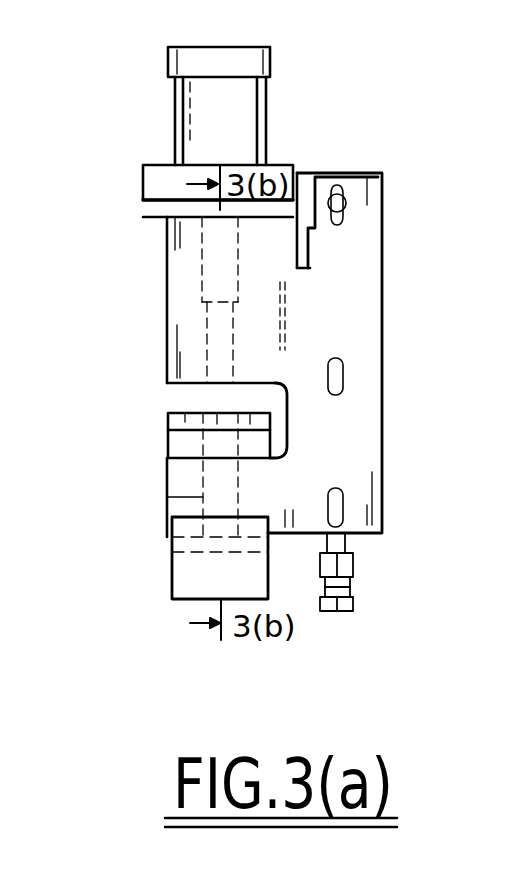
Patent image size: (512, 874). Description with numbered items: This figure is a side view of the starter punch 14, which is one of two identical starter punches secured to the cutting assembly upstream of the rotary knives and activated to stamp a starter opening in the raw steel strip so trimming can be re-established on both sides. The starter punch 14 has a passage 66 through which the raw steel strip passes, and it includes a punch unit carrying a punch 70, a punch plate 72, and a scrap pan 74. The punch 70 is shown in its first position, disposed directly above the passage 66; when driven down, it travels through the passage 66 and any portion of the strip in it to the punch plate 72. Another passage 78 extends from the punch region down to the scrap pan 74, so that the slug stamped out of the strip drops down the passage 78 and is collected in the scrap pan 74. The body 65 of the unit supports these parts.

The starter punch 14 is at (420, 319).
The body 65 is at (183, 250).
The passage 66 is at (200, 394).
The punch 70 is at (222, 284).
The punch plate 72 is at (172, 419).
The scrap pan 74 is at (172, 565).
The passage 78 is at (212, 482).